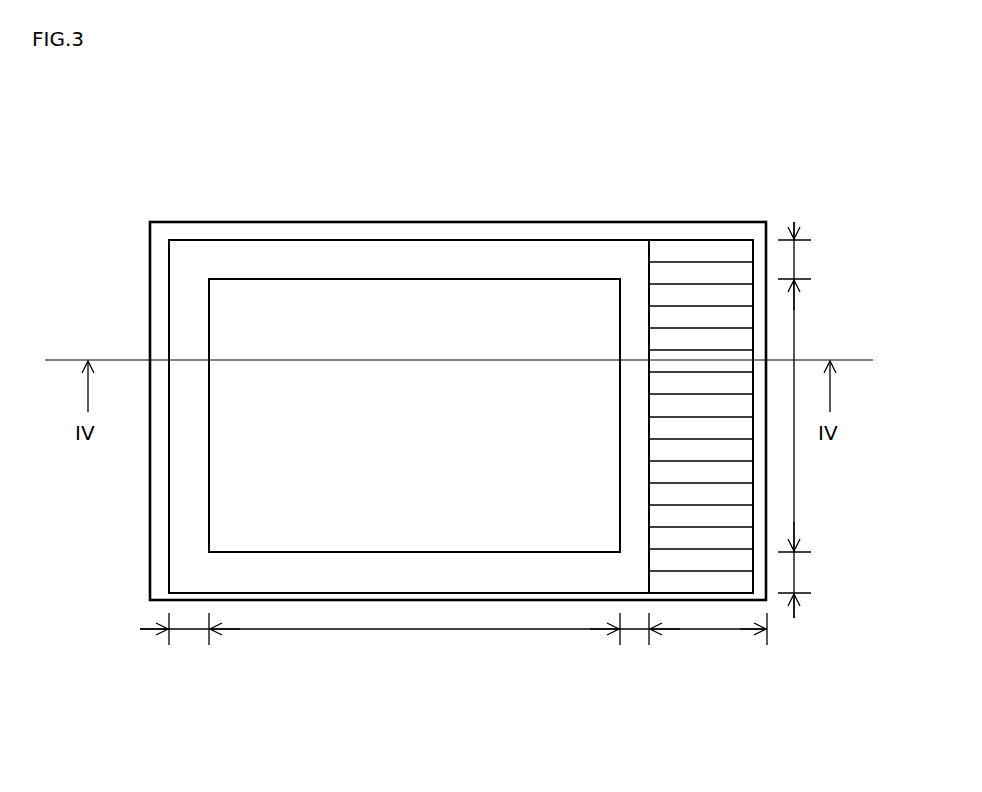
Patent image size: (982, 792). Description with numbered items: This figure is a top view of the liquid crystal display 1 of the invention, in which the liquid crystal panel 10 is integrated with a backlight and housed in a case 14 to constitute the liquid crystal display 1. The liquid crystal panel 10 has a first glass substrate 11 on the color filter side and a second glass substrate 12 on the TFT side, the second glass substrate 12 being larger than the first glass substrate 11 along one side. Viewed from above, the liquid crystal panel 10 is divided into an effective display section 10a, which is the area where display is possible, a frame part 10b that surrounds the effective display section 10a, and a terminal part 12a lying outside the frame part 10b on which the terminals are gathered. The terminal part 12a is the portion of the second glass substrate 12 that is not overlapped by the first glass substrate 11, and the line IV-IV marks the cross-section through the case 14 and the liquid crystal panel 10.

The liquid crystal display 1 is at (150, 134).
The liquid crystal panel 10 is at (504, 240).
The effective display section 10a is at (422, 631).
The frame part 10b is at (187, 631).
The first glass substrate 11 is at (653, 250).
The second glass substrate 12 is at (712, 240).
The terminal part 12a is at (707, 631).
The case 14 is at (388, 222).